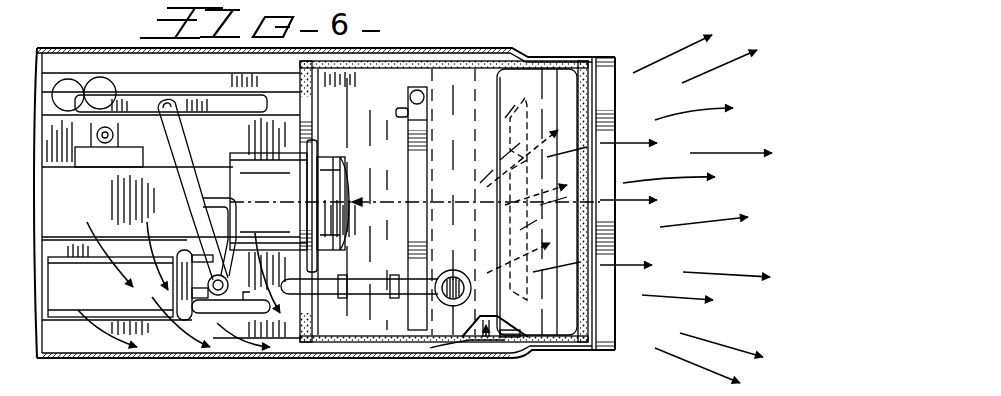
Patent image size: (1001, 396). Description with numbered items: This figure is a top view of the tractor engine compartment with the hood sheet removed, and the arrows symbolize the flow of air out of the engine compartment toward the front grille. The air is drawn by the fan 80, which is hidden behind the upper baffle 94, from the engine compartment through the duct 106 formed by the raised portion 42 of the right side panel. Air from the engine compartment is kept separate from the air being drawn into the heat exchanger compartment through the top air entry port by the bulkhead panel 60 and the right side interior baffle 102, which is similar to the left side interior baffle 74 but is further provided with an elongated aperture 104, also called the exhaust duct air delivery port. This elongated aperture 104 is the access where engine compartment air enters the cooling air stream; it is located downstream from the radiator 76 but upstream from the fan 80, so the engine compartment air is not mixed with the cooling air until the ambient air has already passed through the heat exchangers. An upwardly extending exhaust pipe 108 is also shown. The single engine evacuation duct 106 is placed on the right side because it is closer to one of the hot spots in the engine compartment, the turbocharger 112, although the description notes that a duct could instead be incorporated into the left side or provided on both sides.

The raised portion 42 is at (330, 345).
The bulkhead panel 60 is at (383, 259).
The left side interior baffle 74 is at (442, 73).
The radiator 76 is at (493, 328).
The fan 80 is at (533, 202).
The upper baffle 94 is at (471, 145).
The right side interior baffle 102 is at (393, 328).
The elongated aperture 104 is at (488, 338).
The duct 106 is at (238, 322).
The exhaust pipe 108 is at (233, 250).
The turbocharger 112 is at (185, 305).